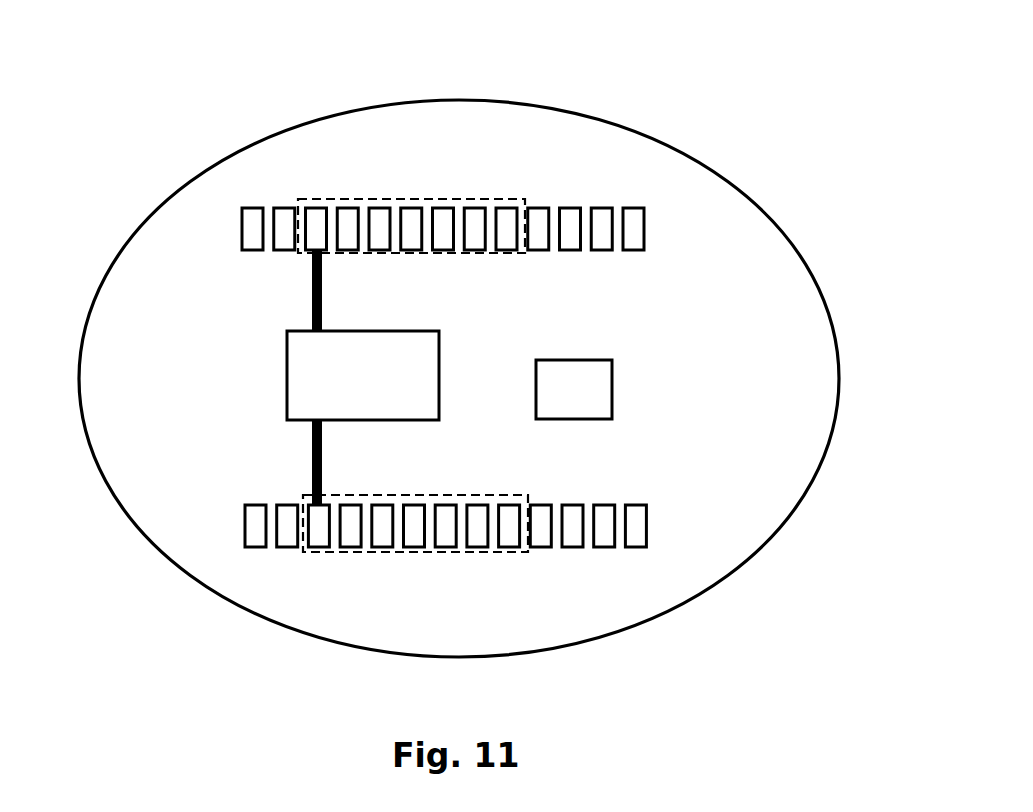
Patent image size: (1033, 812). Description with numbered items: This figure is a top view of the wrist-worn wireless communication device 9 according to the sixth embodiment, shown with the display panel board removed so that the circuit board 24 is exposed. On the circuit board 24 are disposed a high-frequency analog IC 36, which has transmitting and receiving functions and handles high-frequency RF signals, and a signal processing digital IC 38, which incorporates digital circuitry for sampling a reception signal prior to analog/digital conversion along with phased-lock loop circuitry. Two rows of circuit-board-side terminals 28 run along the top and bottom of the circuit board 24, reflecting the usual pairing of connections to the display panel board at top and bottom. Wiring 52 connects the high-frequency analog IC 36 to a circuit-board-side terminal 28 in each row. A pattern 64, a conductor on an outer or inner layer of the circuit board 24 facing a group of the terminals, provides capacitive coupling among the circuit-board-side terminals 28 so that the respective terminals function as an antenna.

The wrist-worn wireless communication device 9 is at (721, 100).
The circuit board 24 is at (715, 500).
The circuit-board-side terminals 28 is at (645, 216).
The high-frequency analog IC 36 is at (300, 375).
The signal processing digital IC 38 is at (612, 372).
The wiring 52 is at (312, 290).
The pattern 64 is at (333, 198).